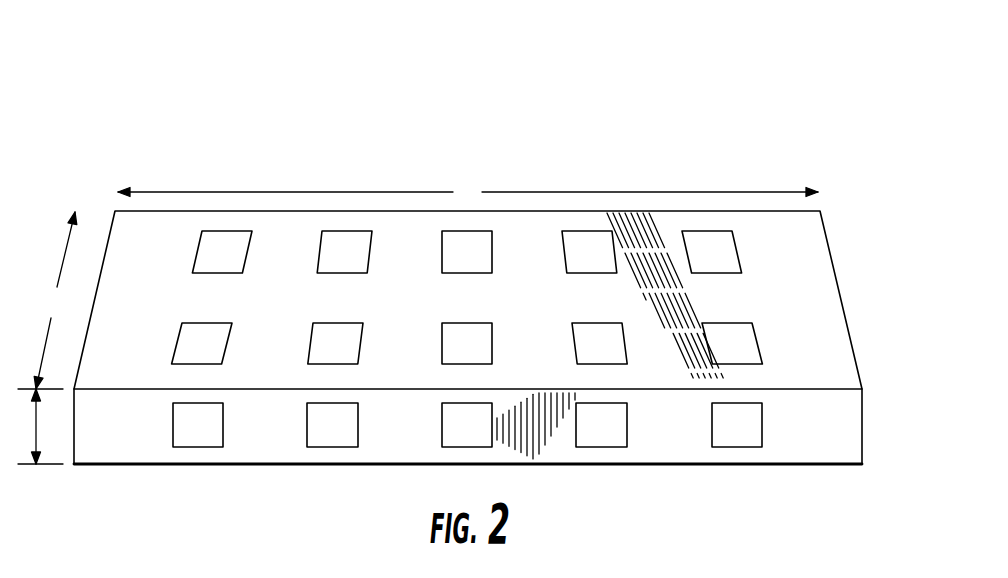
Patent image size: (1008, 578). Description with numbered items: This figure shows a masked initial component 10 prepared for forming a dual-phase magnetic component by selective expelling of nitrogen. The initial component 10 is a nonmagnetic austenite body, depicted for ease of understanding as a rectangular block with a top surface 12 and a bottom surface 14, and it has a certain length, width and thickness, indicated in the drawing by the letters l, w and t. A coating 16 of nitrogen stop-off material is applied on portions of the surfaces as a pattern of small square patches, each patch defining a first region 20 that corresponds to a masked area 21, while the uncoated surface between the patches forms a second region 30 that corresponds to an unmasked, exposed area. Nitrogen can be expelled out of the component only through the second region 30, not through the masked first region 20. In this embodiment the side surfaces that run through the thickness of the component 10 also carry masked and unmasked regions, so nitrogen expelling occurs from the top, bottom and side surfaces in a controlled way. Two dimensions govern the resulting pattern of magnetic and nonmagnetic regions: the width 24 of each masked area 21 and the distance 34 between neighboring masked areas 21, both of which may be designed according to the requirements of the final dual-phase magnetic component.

The initial component 10 is at (461, 268).
The top surface 12 is at (479, 327).
The bottom surface 14 is at (760, 464).
The coating 16 is at (492, 250).
The first region 20 is at (743, 333).
The masked area 21 is at (702, 343).
The width of the masked area 24 is at (612, 252).
The second region 30 is at (283, 280).
The distance between the masked areas 34 is at (441, 252).